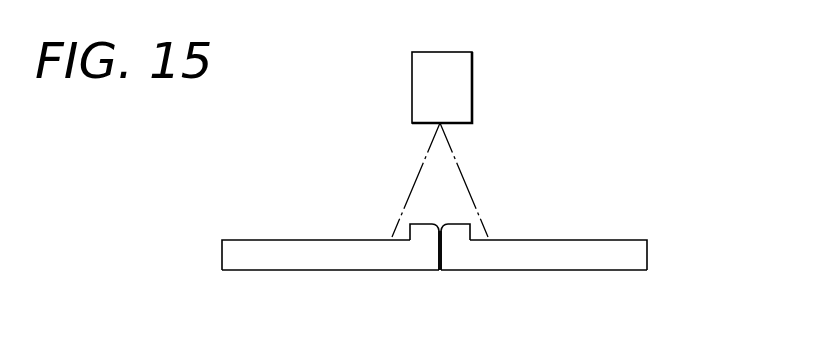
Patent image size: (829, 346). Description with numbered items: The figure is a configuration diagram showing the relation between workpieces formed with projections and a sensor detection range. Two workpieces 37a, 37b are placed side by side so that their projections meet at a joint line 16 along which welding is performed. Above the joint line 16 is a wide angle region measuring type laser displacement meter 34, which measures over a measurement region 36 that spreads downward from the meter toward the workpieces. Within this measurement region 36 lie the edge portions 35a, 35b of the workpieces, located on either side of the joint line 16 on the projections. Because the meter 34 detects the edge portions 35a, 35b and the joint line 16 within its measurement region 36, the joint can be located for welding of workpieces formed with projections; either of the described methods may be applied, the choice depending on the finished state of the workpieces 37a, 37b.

The wide angle region measuring type laser displacement meter 34 is at (463, 97).
The measurement region 36 is at (453, 165).
The joint line 16 is at (438, 229).
The edge portion of workpiece 35a is at (407, 224).
The edge portion of workpiece 35b is at (471, 224).
The workpiece 37a is at (230, 240).
The workpiece 37b is at (637, 254).